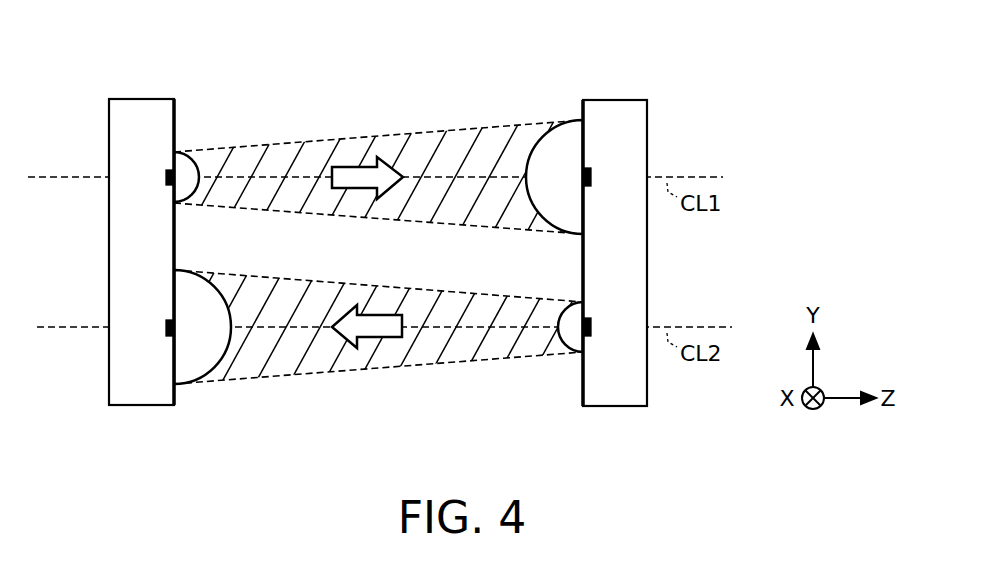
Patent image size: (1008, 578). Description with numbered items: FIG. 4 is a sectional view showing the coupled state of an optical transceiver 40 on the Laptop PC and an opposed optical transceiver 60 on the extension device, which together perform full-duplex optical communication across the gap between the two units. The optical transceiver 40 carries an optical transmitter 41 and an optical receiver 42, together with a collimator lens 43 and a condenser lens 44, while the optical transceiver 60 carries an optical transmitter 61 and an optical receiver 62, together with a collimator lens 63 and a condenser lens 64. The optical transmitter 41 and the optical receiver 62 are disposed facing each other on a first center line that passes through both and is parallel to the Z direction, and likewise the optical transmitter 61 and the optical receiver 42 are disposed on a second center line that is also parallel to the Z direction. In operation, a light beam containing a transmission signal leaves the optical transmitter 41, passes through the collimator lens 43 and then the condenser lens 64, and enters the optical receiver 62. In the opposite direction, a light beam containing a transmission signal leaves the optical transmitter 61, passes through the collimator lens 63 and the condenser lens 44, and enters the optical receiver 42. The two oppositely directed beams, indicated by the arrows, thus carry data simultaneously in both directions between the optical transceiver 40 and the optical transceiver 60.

The optical transceiver 40 is at (142, 99).
The optical transmitter 41 is at (166, 182).
The optical receiver 42 is at (166, 332).
The collimator lens 43 is at (201, 164).
The condenser lens 44 is at (233, 362).
The optical transceiver 60 is at (619, 100).
The optical transmitter 61 is at (592, 326).
The optical receiver 62 is at (592, 177).
The collimator lens 63 is at (560, 341).
The condenser lens 64 is at (532, 147).